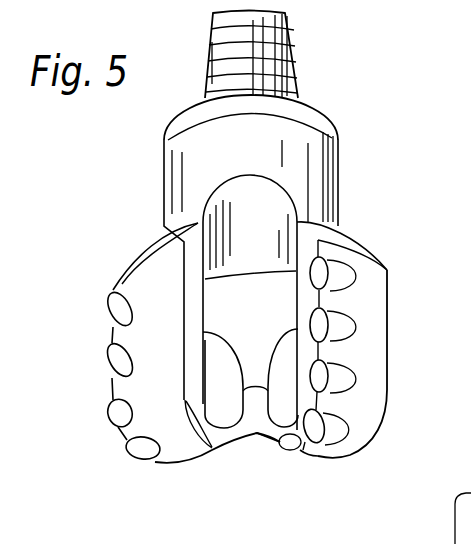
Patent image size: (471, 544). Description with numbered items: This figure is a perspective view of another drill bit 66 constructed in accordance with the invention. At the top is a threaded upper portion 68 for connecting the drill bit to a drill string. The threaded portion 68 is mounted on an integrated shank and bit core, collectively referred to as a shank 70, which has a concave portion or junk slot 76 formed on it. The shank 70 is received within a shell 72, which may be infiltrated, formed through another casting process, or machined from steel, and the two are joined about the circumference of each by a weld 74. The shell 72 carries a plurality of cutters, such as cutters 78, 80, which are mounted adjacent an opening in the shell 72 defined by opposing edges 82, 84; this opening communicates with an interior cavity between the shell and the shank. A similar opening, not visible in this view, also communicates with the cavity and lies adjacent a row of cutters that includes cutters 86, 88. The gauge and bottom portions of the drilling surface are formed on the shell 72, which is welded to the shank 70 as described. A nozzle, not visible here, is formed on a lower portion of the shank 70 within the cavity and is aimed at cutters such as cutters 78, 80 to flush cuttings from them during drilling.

The drill bit 66 is at (308, 80).
The threaded upper portion 68 is at (294, 53).
The shank 70 is at (339, 199).
The shell 72 is at (387, 328).
The weld 74 is at (196, 232).
The junk slot 76 is at (227, 213).
The cutter 78 is at (312, 272).
The cutter 80 is at (312, 378).
The opposing edge 82 is at (212, 448).
The opposing edge 84 is at (310, 398).
The cutter 86 is at (112, 316).
The cutter 88 is at (116, 368).